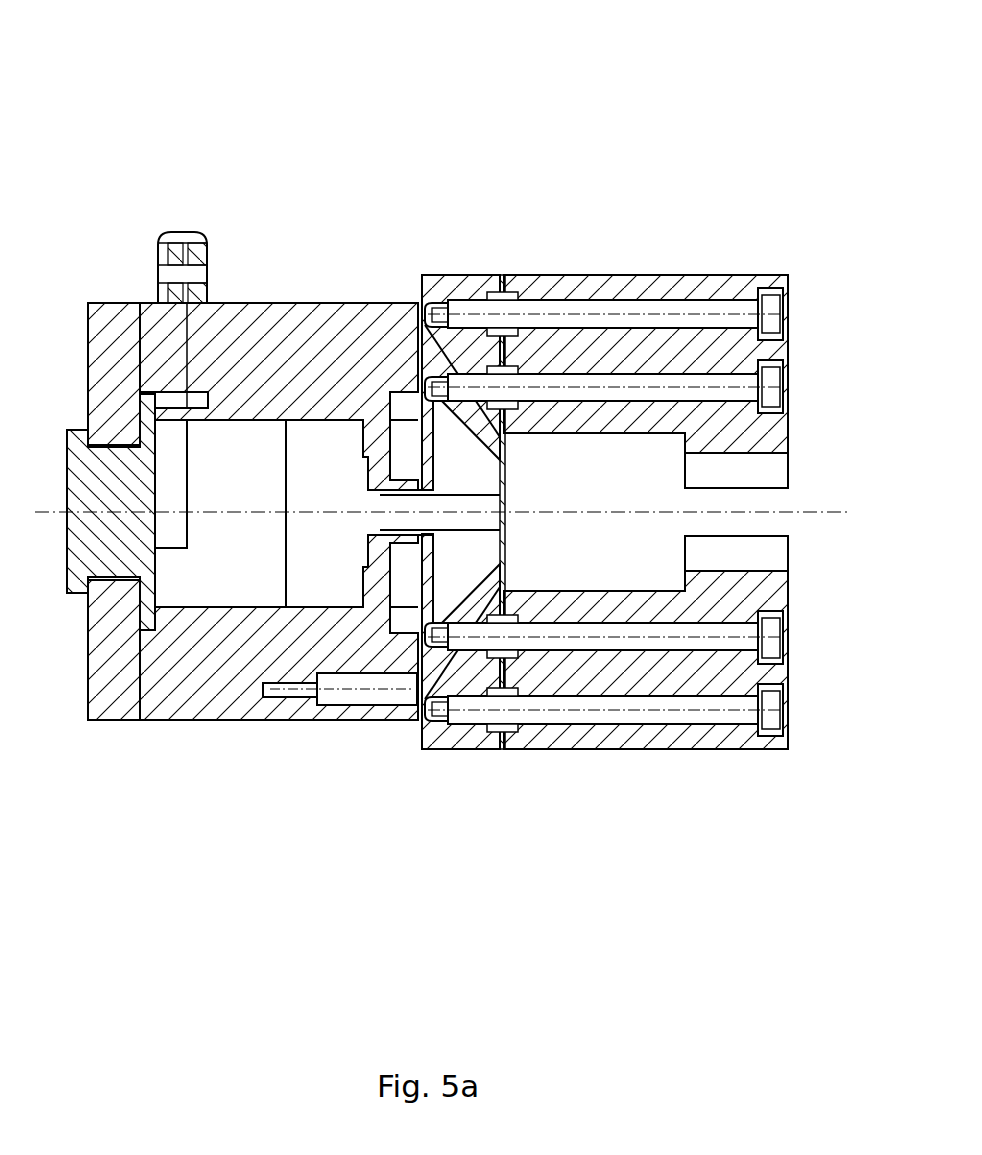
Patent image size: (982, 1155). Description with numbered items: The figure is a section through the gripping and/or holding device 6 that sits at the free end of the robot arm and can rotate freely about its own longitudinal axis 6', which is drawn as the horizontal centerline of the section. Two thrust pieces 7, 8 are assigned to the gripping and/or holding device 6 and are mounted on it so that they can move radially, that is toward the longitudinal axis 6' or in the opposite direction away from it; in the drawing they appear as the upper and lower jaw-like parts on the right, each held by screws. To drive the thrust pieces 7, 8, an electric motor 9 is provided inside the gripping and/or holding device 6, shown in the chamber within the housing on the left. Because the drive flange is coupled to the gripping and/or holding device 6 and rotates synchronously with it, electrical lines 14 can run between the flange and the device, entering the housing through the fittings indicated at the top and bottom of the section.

The gripping and/or holding device 6 is at (286, 379).
The longitudinal axis 6' is at (461, 593).
The thrust piece 7 is at (603, 287).
The thrust piece 8 is at (603, 733).
The electric motor 9 is at (232, 568).
The electrical lines 14 is at (185, 232).